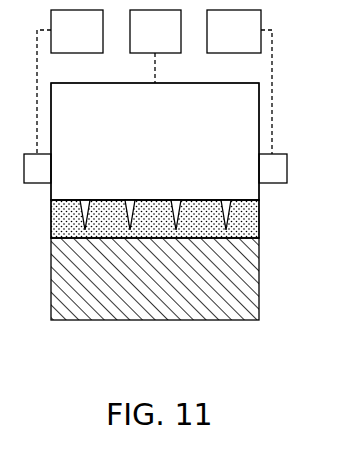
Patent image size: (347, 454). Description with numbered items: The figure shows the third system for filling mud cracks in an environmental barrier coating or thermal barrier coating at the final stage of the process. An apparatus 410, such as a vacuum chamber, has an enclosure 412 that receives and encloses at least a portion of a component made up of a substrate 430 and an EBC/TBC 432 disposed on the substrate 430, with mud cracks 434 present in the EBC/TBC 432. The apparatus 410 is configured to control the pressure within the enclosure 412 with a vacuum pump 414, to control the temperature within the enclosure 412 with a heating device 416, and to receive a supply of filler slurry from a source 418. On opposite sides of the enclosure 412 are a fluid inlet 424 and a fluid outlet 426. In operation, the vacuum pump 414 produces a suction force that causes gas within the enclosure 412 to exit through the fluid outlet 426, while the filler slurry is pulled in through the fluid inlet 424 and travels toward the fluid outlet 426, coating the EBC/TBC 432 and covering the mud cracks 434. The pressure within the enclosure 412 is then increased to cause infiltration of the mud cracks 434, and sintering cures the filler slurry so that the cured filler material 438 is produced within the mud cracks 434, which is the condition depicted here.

The apparatus 410 is at (112, 83).
The enclosure 412 is at (144, 122).
The vacuum pump 414 is at (220, 40).
The heating device 416 is at (141, 40).
The source 418 is at (63, 40).
The fluid inlet 424 is at (44, 153).
The fluid outlet 426 is at (288, 163).
The substrate 430 is at (62, 280).
The EBC/TBC 432 is at (62, 226).
The mud cracks 434 is at (233, 209).
The cured filler material 438 is at (176, 196).